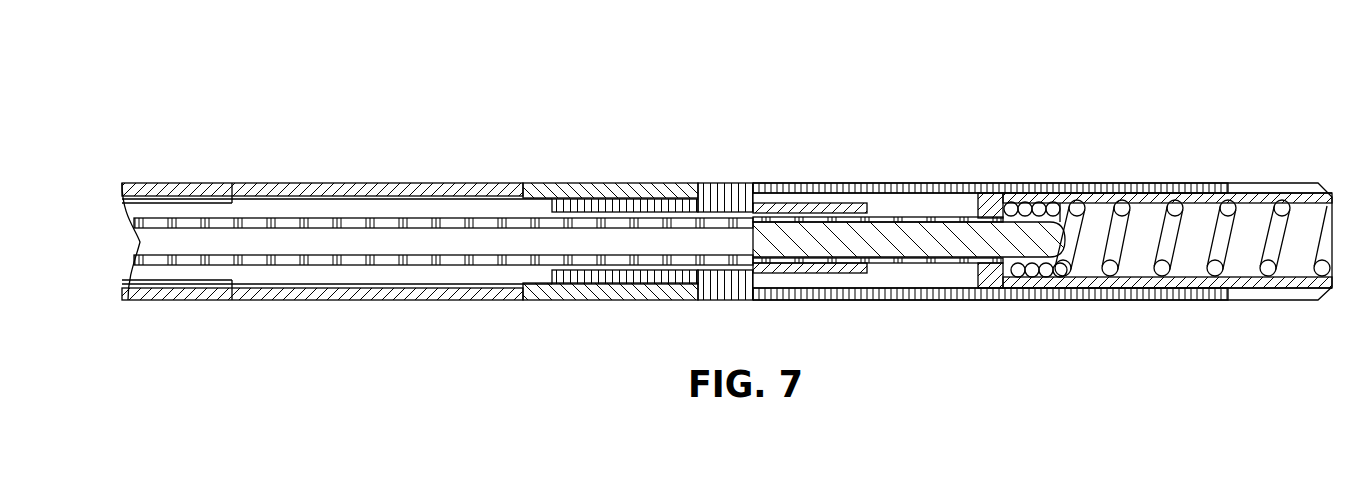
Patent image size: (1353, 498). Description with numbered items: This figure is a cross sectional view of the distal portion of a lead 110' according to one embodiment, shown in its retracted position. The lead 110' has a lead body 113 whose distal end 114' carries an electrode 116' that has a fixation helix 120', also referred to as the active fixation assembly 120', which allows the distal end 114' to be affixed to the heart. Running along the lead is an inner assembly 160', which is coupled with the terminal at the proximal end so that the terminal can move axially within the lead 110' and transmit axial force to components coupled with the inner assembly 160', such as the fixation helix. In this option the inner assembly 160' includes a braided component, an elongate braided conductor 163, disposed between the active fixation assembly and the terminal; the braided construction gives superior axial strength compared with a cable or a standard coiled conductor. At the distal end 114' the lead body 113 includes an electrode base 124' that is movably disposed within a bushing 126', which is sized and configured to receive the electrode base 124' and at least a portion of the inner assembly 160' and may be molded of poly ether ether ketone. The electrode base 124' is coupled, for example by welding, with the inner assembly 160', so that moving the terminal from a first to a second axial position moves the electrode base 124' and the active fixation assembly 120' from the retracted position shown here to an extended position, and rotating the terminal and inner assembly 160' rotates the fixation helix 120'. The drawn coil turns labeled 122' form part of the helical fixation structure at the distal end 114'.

The lead 110' is at (568, 160).
The lead body 113 is at (707, 181).
The distal end 114' is at (1042, 259).
The electrode 116' is at (1164, 205).
The fixation helix 120' is at (1263, 203).
The coil spring 122' is at (1192, 269).
The electrode base 124' is at (1022, 298).
The bushing 126' is at (1030, 170).
The inner assembly 160' is at (909, 200).
The elongate braided conductor 163 is at (407, 215).